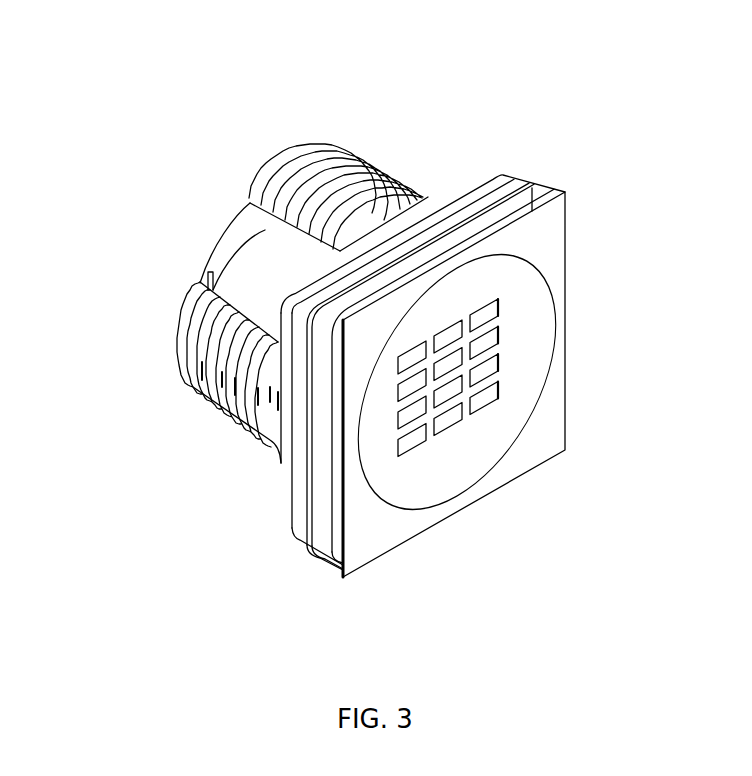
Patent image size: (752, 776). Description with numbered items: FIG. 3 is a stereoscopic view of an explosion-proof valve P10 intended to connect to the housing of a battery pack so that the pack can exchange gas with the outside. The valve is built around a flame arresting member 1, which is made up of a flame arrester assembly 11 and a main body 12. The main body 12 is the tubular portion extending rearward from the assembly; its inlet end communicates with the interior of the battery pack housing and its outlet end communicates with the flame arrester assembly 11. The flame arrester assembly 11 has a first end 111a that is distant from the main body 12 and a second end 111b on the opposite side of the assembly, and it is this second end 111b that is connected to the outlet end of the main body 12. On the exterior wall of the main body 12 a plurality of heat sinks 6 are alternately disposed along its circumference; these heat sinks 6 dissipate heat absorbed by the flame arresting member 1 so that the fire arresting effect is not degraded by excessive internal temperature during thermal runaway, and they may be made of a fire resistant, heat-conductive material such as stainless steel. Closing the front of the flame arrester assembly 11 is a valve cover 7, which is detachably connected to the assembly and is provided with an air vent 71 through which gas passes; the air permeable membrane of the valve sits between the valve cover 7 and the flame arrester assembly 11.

The explosion-proof valve P10 is at (262, 80).
The flame arresting member 1 is at (495, 138).
The flame arrester assembly 11 is at (424, 386).
The first end 111a is at (344, 520).
The second end 111b is at (290, 493).
The main body 12 is at (267, 243).
The heat sink 6 is at (160, 333).
The valve cover 7 is at (502, 384).
The air vent 71 is at (497, 367).